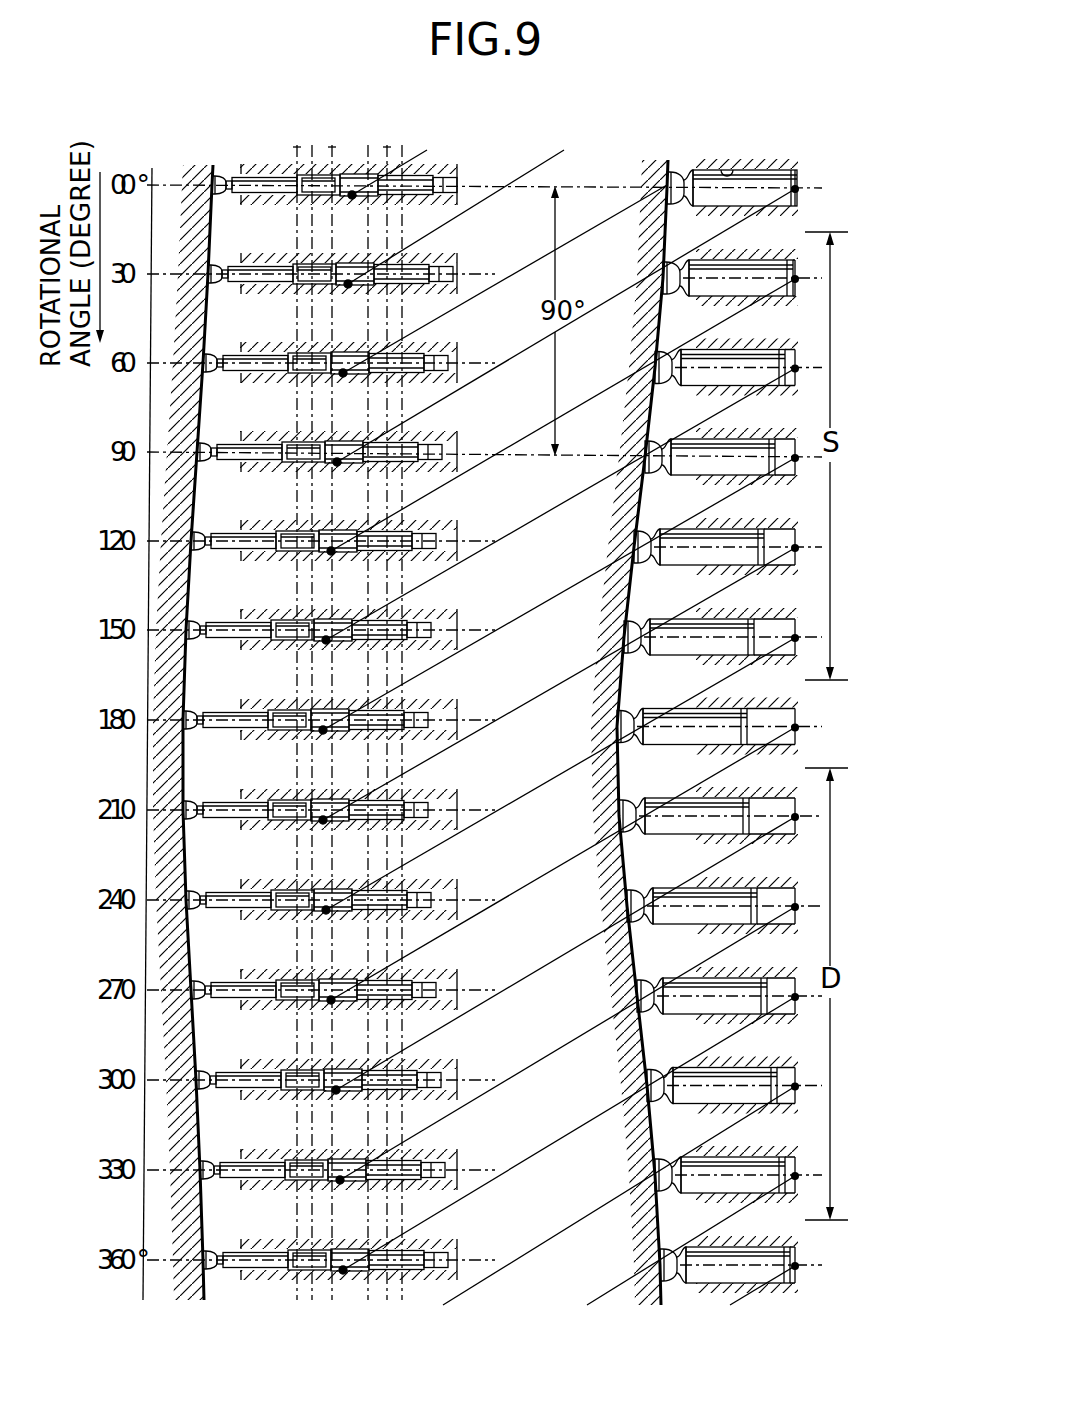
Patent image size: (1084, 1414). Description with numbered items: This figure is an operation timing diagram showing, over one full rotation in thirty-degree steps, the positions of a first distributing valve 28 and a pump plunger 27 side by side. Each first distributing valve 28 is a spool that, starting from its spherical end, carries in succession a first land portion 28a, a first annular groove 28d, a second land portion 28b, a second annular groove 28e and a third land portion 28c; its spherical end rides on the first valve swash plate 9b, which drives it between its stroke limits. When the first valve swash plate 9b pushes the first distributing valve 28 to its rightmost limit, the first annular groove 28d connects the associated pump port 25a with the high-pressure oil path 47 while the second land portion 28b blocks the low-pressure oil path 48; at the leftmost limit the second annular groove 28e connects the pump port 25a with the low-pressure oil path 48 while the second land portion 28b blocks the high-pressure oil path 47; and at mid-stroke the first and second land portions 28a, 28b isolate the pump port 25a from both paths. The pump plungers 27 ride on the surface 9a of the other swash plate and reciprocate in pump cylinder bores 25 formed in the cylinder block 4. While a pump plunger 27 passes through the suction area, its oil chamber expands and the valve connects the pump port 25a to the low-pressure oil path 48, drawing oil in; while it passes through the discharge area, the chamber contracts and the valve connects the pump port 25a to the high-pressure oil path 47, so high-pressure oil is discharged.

The cylinder block 4 is at (428, 164).
The first cam surface 9a is at (665, 184).
The first valve swash plate 9b is at (211, 168).
The pump cylinder bore 25 is at (729, 169).
The pump port 25a is at (342, 130).
The pump plunger 27 is at (772, 191).
The first distributing valve 28 is at (362, 699).
The first land portion 28a is at (260, 177).
The second land portion 28b is at (372, 197).
The third land portion 28c is at (438, 189).
The first annular groove 28d is at (303, 196).
The second annular groove 28e is at (440, 195).
The high-pressure oil path 47 is at (298, 148).
The low-pressure oil path 48 is at (390, 148).